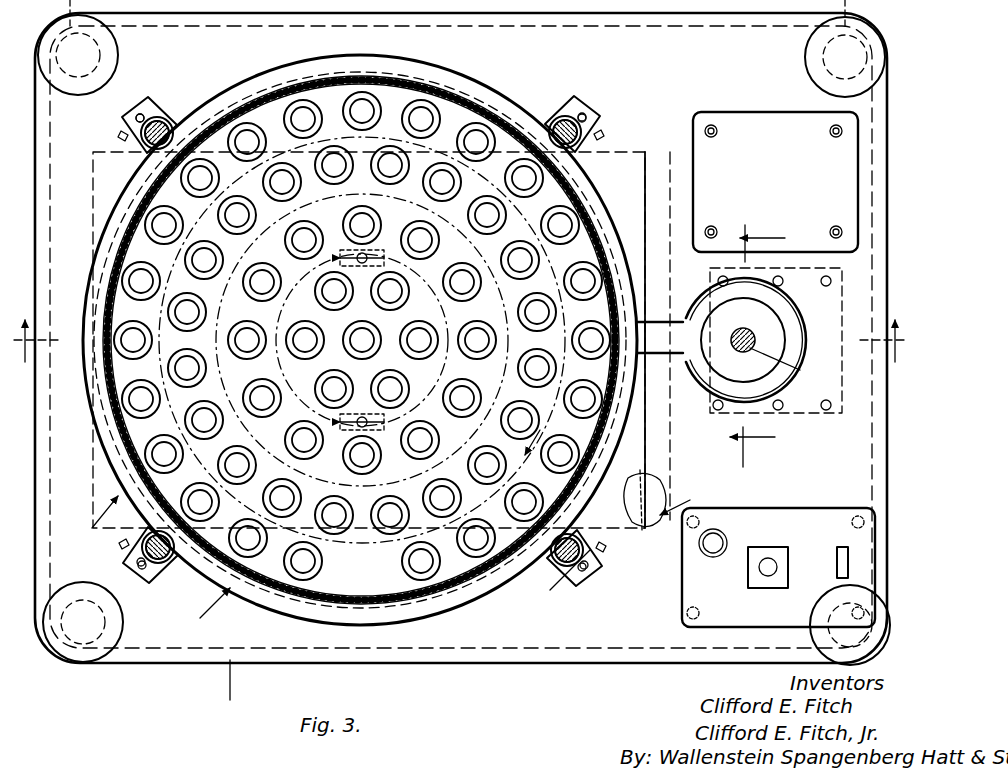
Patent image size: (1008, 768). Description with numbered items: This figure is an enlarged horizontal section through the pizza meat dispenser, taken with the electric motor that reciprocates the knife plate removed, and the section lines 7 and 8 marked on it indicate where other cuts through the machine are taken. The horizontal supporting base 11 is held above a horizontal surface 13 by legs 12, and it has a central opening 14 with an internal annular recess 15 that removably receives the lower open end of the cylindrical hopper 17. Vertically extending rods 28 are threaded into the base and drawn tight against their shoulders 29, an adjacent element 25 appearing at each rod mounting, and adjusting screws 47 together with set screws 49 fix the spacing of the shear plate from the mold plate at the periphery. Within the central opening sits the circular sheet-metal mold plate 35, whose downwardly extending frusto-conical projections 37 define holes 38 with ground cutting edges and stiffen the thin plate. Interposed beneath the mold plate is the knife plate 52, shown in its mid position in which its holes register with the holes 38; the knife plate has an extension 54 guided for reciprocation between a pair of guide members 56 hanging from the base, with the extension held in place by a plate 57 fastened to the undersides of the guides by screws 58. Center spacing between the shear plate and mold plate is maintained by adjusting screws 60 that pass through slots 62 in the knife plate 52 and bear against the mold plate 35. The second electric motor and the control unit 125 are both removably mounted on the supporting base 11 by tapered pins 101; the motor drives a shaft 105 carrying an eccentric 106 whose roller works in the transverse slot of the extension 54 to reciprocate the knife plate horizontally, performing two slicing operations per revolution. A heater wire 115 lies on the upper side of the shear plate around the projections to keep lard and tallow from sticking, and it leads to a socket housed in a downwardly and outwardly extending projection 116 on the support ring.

The section line 7- 7 is at (765, 346).
The section line 8- 8 is at (460, 352).
The supporting base 11 is at (326, 598).
The legs 12 is at (215, 478).
The horizontal surface 13 is at (368, 258).
The central opening 14 is at (410, 88).
The internal annular recess 15 is at (620, 459).
The hopper 17 is at (318, 78).
The pin 25 is at (120, 130).
The rods 28 is at (160, 112).
The shoulders 29 is at (165, 118).
The mold plate 35 is at (450, 118).
The frusto-conical projections 37 is at (258, 232).
The holes 38 is at (195, 180).
The adjusting screws 47 is at (592, 100).
The set screws 49 is at (125, 140).
The knife plate 52 is at (248, 78).
The extension 54 is at (690, 292).
The guide members 56 is at (800, 268).
The plate 57 is at (820, 340).
The screws 58 is at (826, 286).
The adjusting screws 60 is at (372, 250).
The slots 62 is at (352, 252).
The tapered pins 101 is at (716, 136).
The shaft 105 is at (800, 370).
The eccentric 106 is at (775, 338).
The heater wire 115 is at (347, 78).
The projection 116 is at (660, 478).
The control unit 125 is at (796, 508).